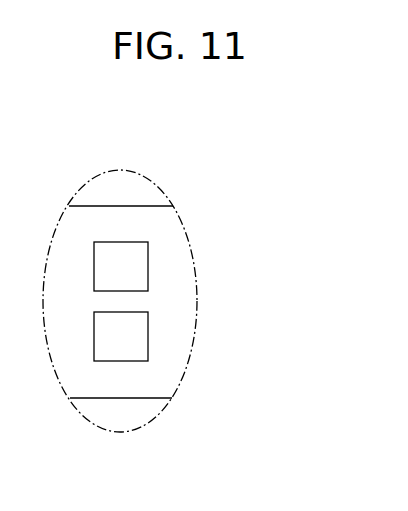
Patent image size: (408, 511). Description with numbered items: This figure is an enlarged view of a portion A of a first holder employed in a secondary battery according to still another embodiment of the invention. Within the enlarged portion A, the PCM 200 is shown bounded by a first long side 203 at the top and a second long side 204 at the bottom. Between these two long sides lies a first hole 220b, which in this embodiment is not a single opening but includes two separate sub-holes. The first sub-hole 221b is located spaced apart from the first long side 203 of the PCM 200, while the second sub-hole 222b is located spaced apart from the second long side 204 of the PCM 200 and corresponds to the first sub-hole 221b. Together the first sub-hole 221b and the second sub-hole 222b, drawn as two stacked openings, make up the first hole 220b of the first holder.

The PCM 200 is at (158, 217).
The first long side 203 is at (140, 206).
The second long side 204 is at (140, 398).
The portion A is at (88, 182).
The first sub-hole 221b is at (133, 277).
The second sub-hole 222b is at (133, 327).
The first hole 220b is at (269, 276).